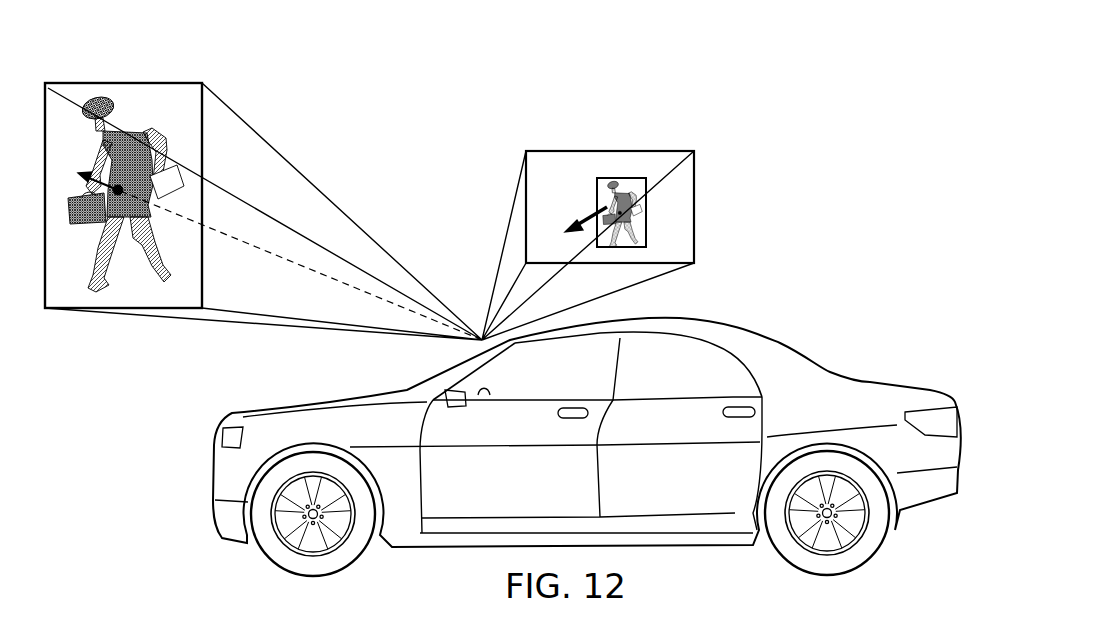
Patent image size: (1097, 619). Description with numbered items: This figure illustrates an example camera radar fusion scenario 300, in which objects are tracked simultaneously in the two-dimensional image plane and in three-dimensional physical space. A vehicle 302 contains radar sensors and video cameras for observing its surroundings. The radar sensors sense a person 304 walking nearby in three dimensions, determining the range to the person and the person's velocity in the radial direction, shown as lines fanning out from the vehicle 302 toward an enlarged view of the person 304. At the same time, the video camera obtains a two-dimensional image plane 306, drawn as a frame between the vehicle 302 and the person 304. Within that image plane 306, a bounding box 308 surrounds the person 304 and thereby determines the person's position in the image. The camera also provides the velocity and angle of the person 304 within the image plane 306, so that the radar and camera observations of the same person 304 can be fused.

The scenario 300 is at (752, 36).
The vehicle 302 is at (797, 351).
The person 304 is at (97, 100).
The 2D image plane 306 is at (694, 208).
The bounding box 308 is at (646, 213).